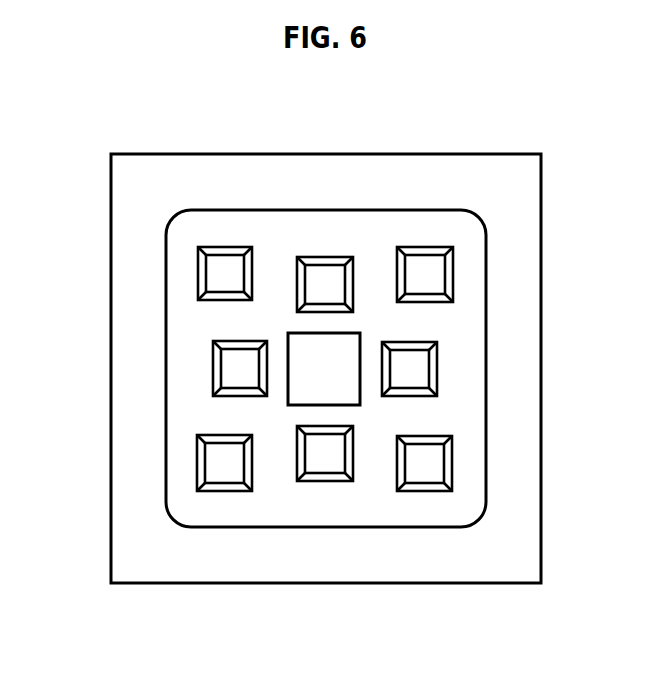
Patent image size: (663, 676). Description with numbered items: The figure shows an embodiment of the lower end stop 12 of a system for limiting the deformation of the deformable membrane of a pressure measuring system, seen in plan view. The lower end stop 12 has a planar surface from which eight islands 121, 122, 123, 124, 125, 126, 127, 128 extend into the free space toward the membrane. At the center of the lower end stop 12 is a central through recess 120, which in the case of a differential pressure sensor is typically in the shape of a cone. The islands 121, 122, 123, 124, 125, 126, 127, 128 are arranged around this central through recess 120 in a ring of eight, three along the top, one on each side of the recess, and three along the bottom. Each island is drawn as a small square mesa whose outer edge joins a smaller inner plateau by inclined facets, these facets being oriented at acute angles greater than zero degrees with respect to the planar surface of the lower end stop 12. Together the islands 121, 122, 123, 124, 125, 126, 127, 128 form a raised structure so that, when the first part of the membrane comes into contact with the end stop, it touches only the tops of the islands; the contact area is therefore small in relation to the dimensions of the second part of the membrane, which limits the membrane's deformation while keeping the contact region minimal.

The lower end stop 12 is at (541, 241).
The central through recess 120 is at (323, 368).
The island 121 is at (225, 273).
The island 122 is at (325, 283).
The island 123 is at (425, 273).
The island 124 is at (240, 368).
The island 125 is at (408, 368).
The island 126 is at (225, 463).
The island 127 is at (325, 453).
The island 128 is at (423, 463).